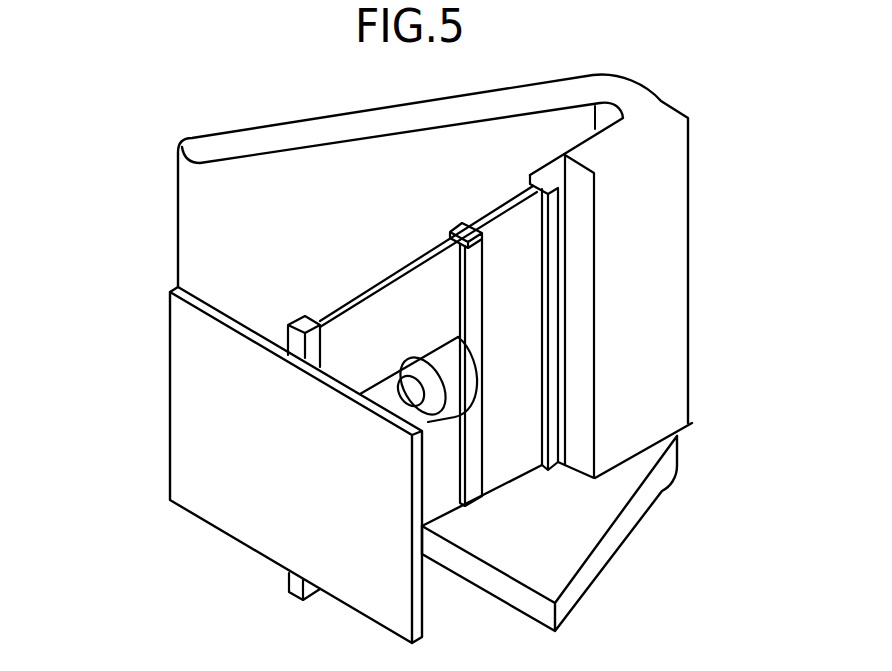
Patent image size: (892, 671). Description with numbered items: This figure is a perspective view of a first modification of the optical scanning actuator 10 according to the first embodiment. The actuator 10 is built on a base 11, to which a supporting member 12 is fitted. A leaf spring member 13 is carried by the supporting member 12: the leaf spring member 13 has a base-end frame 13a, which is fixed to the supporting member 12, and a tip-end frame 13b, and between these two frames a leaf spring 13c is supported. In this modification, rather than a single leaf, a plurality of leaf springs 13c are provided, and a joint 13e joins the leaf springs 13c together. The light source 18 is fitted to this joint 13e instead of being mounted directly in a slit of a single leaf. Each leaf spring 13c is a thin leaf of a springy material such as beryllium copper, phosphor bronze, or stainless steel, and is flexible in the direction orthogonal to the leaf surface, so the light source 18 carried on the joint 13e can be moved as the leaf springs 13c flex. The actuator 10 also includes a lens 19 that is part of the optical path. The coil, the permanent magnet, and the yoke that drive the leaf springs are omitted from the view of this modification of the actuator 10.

The optical scanning actuator 10 is at (136, 130).
The base 11 is at (573, 530).
The supporting member 12 is at (237, 146).
The leaf spring member 13 is at (386, 275).
The base-end frame 13a is at (553, 320).
The tip-end frame 13b is at (292, 343).
The leaf spring 13c is at (410, 292).
The joint 13e is at (472, 436).
The light source 18 is at (462, 388).
The lens 19 is at (223, 497).